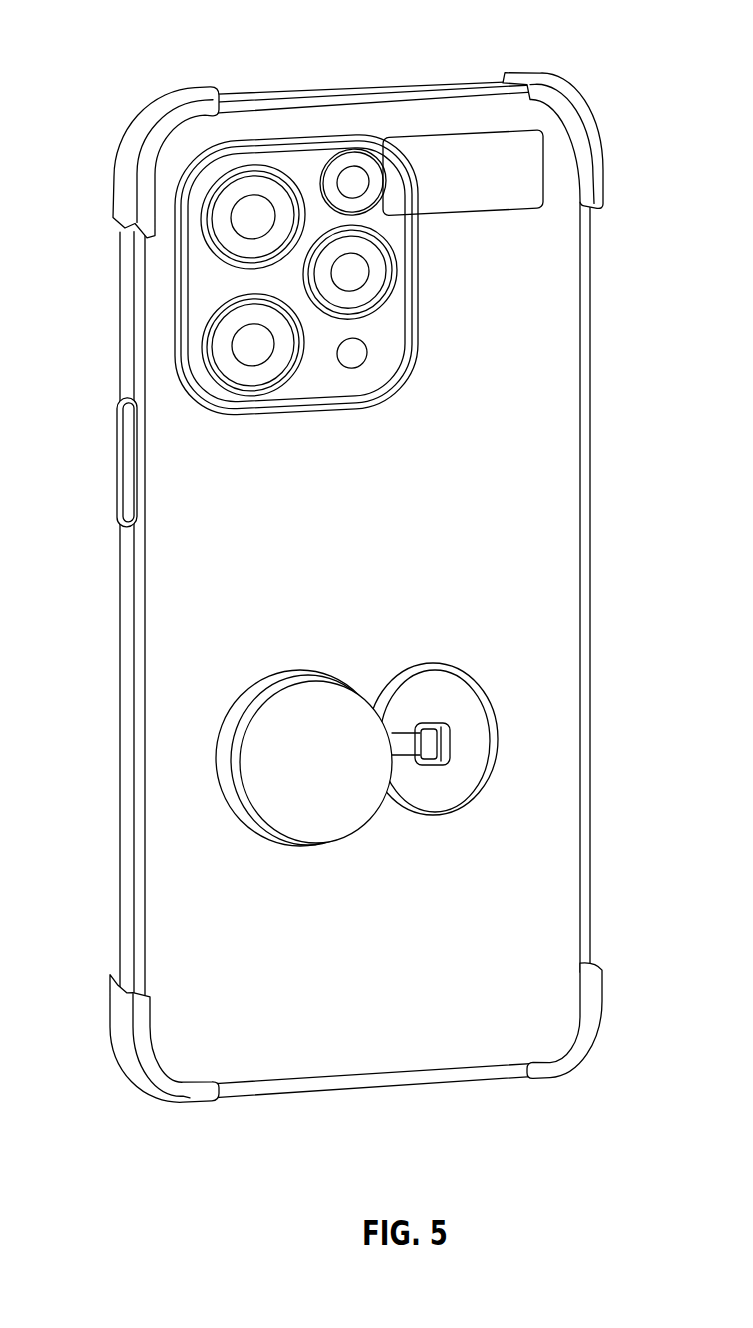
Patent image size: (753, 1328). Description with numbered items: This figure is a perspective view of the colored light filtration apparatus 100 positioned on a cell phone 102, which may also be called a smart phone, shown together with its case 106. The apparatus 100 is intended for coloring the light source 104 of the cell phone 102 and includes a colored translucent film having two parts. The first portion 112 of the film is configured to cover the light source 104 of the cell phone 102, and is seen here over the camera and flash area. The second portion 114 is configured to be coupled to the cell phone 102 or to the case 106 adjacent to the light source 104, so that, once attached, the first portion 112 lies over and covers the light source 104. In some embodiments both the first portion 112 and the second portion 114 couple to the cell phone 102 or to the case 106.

The apparatus 100 is at (472, 126).
The cell phone 102 is at (310, 379).
The light source 104 is at (355, 181).
The case 106 is at (498, 492).
The first portion 112 is at (357, 136).
The second portion 114 is at (523, 212).